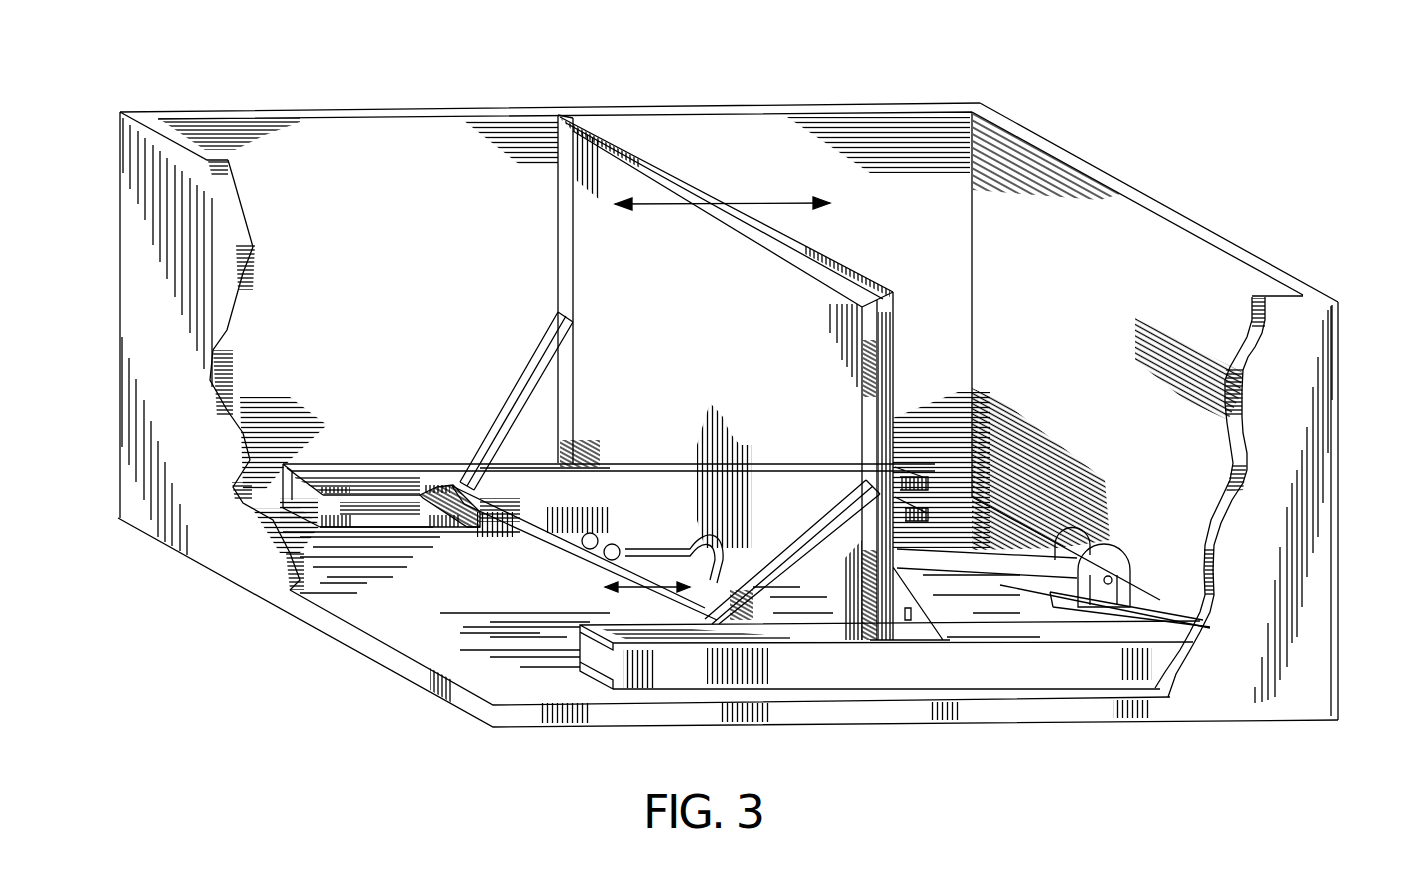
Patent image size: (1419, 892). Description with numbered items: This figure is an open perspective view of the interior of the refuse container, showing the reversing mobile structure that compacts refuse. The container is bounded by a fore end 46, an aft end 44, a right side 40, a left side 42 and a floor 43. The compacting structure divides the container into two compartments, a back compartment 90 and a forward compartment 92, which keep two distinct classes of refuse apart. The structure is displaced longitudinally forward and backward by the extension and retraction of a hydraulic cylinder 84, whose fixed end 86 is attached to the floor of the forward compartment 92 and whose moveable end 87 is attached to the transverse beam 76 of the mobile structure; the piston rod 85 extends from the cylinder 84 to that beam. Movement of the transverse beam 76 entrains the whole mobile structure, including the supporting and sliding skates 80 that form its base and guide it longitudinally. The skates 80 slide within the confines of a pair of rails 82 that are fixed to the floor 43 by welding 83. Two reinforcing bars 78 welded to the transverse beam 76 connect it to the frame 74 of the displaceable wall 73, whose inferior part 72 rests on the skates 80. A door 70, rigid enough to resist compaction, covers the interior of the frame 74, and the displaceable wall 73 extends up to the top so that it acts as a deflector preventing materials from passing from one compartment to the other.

The right side 40 is at (398, 112).
The left side 42 is at (1316, 584).
The floor 43 is at (1007, 612).
The aft end 44 is at (1093, 230).
The fore end 46 is at (148, 396).
The door 70 is at (590, 207).
The inferior part of the frame 72 is at (750, 555).
The displaceable wall 73 is at (896, 432).
The frame 74 is at (622, 160).
The transverse beam 76 is at (588, 560).
The reinforcing bars 78 is at (617, 334).
The skates 80 is at (617, 510).
The rails 82 is at (433, 477).
The welding 83 is at (413, 563).
The hydraulic cylinder 84 is at (1000, 557).
The piston rod 85 is at (697, 540).
The fixed end 86 is at (1137, 600).
The moveable end 87 is at (617, 580).
The back compartment 90 is at (862, 150).
The forward compartment 92 is at (283, 134).